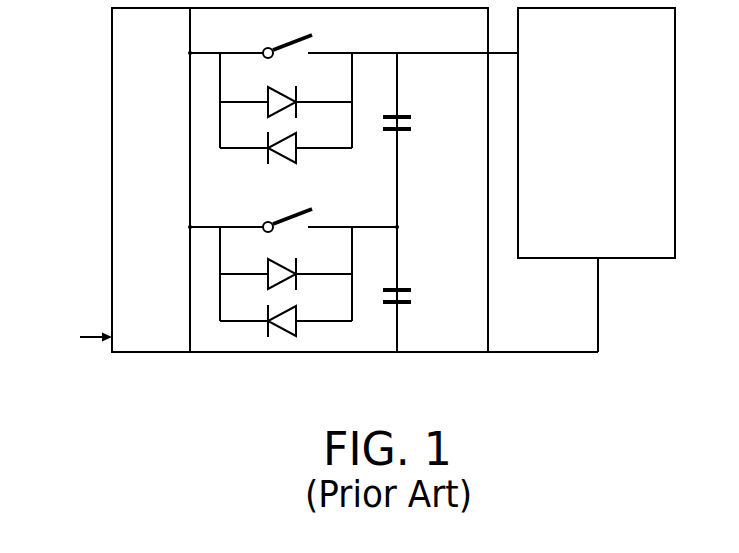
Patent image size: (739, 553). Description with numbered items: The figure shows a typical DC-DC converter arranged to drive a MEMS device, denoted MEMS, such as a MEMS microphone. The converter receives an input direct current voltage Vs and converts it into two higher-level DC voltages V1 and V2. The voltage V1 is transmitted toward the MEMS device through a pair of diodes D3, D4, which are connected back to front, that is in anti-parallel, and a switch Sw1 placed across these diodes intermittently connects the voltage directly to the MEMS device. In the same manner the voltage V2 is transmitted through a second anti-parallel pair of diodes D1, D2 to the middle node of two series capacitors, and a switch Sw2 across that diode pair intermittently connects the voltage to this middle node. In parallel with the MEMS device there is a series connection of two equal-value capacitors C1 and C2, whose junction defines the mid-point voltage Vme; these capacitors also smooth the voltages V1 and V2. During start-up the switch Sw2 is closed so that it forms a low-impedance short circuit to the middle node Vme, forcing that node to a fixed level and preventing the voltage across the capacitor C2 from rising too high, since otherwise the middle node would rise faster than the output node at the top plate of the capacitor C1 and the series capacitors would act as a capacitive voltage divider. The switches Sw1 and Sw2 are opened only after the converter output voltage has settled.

The higher level DC voltage V1 is at (173, 54).
The higher level DC voltage V2 is at (173, 228).
The mid-point voltage Vme is at (422, 226).
The input direct current voltage Vs is at (79, 336).
The switch Sw1 is at (278, 37).
The switch Sw2 is at (278, 210).
The diode D1 is at (286, 315).
The diode D2 is at (286, 268).
The diode D3 is at (286, 143).
The diode D4 is at (286, 97).
The capacitor C1 is at (413, 125).
The capacitor C2 is at (414, 298).
The MEMS device MEMS is at (596, 133).